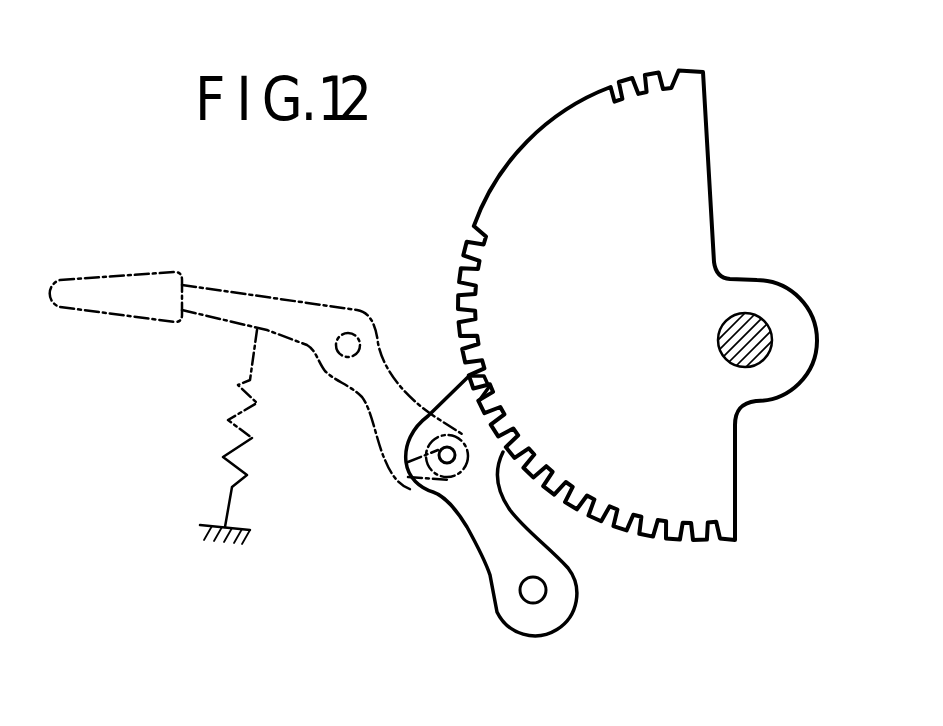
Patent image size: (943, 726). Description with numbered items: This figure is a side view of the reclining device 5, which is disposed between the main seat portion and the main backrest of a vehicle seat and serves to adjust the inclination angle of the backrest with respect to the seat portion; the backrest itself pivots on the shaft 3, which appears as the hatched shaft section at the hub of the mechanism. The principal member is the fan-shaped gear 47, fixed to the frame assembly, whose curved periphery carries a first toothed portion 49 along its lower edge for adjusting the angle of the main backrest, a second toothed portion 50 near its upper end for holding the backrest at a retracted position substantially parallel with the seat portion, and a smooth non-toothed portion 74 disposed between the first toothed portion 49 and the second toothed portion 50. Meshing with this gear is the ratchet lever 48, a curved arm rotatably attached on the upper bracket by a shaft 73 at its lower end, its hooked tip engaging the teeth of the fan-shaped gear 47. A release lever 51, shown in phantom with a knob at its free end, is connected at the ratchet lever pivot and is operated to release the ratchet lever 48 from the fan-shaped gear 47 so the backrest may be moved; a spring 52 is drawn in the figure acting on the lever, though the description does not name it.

The shaft 3 is at (751, 344).
The reclining device 5 is at (710, 117).
The fan-shaped gear 47 is at (558, 115).
The ratchet lever 48 is at (477, 543).
The first toothed portion 49 is at (637, 542).
The second toothed portion 50 is at (632, 83).
The release lever 51 is at (128, 272).
The spring 52 is at (240, 392).
The shaft 73 is at (527, 593).
The non-toothed portion 74 is at (513, 157).